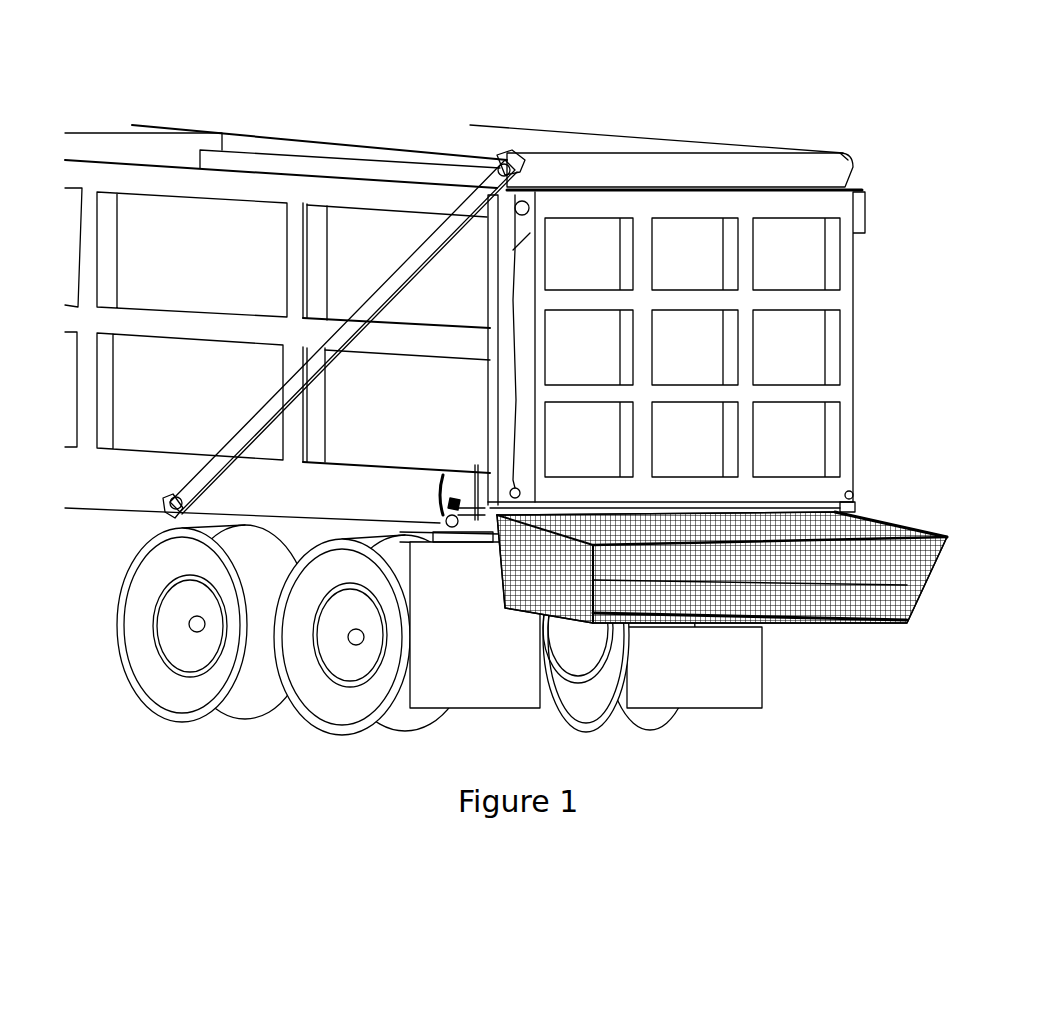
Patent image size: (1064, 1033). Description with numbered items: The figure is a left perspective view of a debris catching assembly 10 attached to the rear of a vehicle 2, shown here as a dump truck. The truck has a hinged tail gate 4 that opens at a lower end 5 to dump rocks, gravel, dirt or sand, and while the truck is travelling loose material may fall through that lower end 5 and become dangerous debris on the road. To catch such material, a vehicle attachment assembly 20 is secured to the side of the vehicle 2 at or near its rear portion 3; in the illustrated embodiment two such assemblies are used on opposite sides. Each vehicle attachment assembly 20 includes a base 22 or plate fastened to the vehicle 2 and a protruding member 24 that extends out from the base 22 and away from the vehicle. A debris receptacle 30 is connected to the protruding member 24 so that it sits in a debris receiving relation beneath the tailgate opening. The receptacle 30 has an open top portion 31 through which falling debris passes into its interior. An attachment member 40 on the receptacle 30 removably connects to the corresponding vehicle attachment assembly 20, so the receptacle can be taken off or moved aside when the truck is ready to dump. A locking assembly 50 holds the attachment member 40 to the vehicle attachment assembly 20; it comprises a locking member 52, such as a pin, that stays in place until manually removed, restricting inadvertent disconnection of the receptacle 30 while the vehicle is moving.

The vehicle 2 is at (183, 147).
The rear portion 3 is at (763, 115).
The tail gate 4 is at (843, 298).
The lower end 5 is at (847, 511).
The debris catching assembly 10 is at (780, 555).
The vehicle attachment assembly 20 is at (398, 446).
The base 22 is at (462, 467).
The protruding member 24 is at (440, 520).
The debris receptacle 30 is at (947, 585).
The open top portion 31 is at (873, 513).
The attachment member 40 is at (460, 543).
The locking assembly 50 is at (436, 491).
The locking member 52 is at (445, 470).